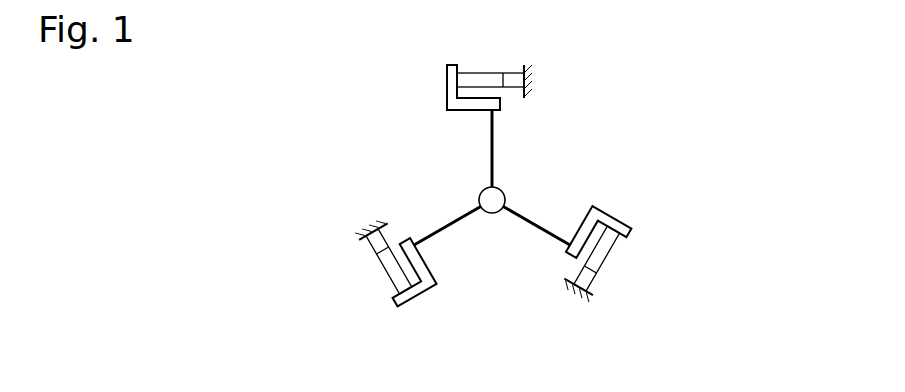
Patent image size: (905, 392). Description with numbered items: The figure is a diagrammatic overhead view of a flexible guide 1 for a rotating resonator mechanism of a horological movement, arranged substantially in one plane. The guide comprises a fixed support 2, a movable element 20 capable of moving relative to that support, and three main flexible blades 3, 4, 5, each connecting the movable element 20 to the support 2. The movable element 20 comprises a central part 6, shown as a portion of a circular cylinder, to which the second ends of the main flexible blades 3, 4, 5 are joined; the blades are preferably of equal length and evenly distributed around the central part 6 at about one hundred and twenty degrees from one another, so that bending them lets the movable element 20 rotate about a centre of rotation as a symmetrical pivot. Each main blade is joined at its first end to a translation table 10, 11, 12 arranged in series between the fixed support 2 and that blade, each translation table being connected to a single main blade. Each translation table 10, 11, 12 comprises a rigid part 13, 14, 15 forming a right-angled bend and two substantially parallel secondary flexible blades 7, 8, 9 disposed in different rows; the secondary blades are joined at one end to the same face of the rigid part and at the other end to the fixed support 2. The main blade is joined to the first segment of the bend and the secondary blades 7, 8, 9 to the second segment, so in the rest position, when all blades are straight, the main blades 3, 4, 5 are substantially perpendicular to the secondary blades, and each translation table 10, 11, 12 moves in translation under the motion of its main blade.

The flexible guide 1 is at (264, 47).
The fixed support 2 is at (527, 82).
The main flexible blade 3 is at (494, 139).
The main flexible blade 4 is at (450, 222).
The main flexible blade 5 is at (528, 222).
The central part 6 is at (503, 190).
The secondary flexible blade 7 is at (478, 73).
The secondary flexible blade 8 is at (608, 253).
The secondary flexible blade 9 is at (402, 282).
The translation table 10 is at (431, 52).
The translation table 11 is at (671, 233).
The translation table 12 is at (340, 268).
The rigid part 13 is at (447, 88).
The rigid part 14 is at (610, 213).
The rigid part 15 is at (423, 293).
The movable element 20 is at (636, 99).